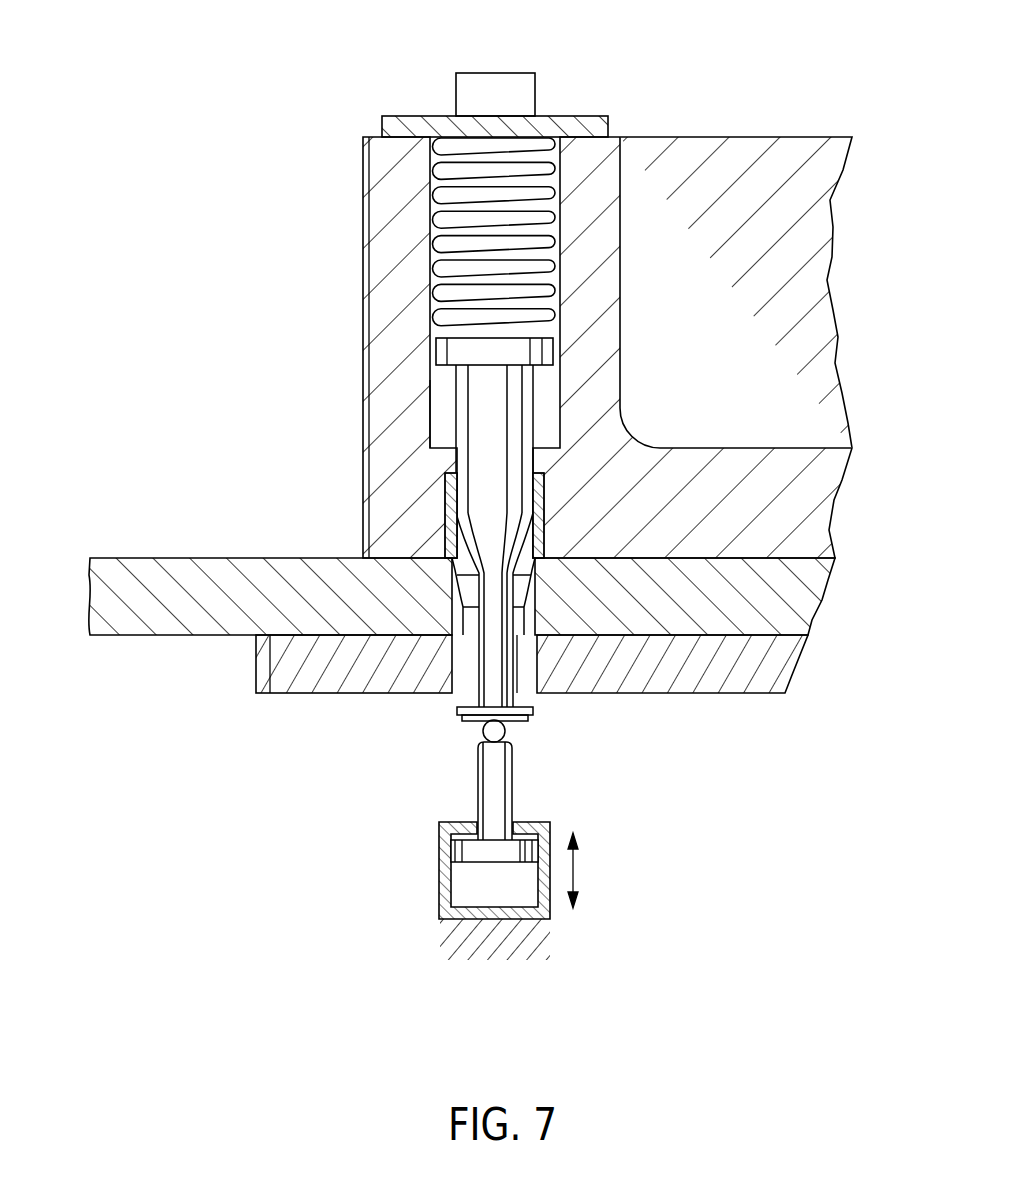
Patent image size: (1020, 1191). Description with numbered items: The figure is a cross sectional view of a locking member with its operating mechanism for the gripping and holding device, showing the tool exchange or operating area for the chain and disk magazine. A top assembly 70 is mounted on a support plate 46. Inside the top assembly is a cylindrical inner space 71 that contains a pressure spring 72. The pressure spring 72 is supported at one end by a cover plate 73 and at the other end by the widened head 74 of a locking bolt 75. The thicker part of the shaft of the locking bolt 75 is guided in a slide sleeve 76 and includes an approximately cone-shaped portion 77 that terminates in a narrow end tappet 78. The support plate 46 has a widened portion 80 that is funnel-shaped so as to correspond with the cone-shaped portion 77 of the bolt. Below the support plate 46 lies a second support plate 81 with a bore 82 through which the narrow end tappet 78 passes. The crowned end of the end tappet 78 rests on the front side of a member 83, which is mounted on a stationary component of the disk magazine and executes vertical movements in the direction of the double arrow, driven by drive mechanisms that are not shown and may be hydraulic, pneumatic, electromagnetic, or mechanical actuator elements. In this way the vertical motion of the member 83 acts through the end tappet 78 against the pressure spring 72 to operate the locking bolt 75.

The support plate 46 is at (130, 568).
The top assembly 70 is at (390, 240).
The cylindrical inner space 71 is at (443, 387).
The pressure spring 72 is at (435, 185).
The cover plate 73 is at (568, 118).
The widened head 74 is at (540, 350).
The locking bolt 75 is at (490, 428).
The slide sleeve 76 is at (450, 518).
The cone-shaped portion 77 is at (490, 547).
The end tappet 78 is at (495, 683).
The widened portion 80 is at (553, 603).
The support plate 81 is at (752, 675).
The bore 82 is at (462, 661).
The member 83 is at (440, 877).